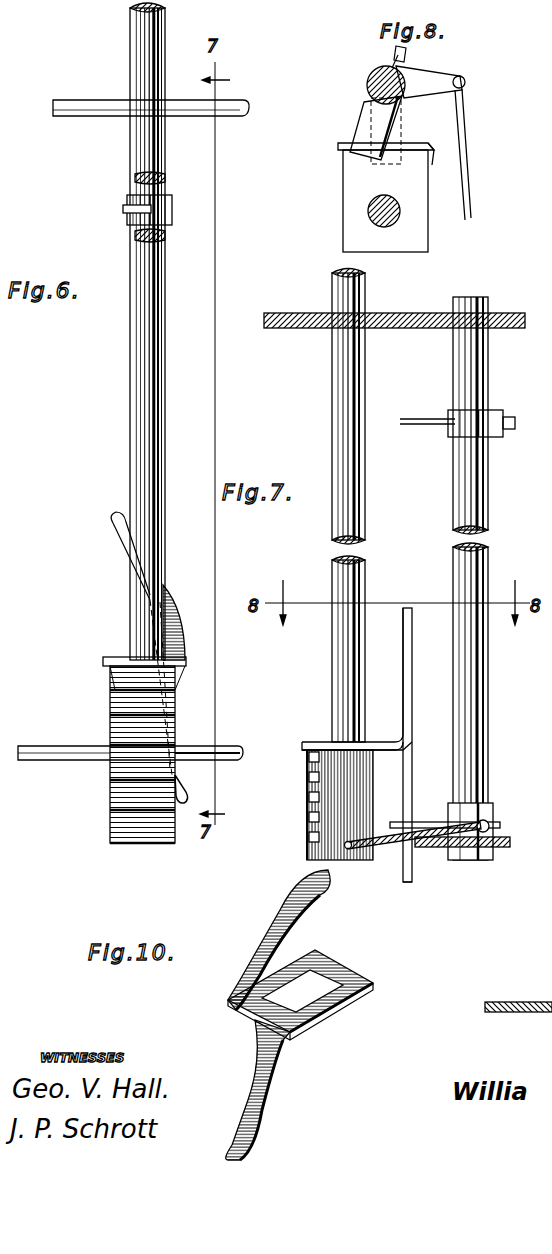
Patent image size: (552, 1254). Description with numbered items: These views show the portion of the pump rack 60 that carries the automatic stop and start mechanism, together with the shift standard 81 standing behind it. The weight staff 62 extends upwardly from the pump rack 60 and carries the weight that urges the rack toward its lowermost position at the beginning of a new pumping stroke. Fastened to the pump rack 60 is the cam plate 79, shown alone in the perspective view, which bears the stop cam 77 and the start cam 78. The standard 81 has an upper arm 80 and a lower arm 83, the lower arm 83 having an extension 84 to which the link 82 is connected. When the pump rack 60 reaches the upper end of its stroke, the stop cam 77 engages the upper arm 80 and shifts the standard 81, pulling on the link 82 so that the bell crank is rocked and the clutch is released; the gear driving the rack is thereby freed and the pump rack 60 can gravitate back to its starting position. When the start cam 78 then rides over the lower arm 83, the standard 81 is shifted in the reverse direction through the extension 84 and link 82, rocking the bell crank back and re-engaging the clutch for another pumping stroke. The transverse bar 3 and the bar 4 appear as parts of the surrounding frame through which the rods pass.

In FIG. 6, the transverse bar 3 is at (232, 107).
In FIG. 7, the transverse bar 3 is at (292, 312).
In FIG. 10, the bar 4 is at (512, 1012).
In FIG. 6, the pump rack 60 is at (128, 830).
In FIG. 7, the pump rack 60 is at (305, 796).
In FIG. 6, the weight staff 62 is at (163, 362).
In FIG. 8, the weight staff 62 is at (378, 199).
In FIG. 7, the weight staff 62 is at (340, 425).
In FIG. 6, the stop cam 77 is at (114, 533).
In FIG. 8, the stop cam 77 is at (338, 146).
In FIG. 7, the stop cam 77 is at (403, 625).
In FIG. 10, the stop cam 77 is at (290, 888).
In FIG. 6, the start cam 78 is at (190, 797).
In FIG. 8, the start cam 78 is at (431, 152).
In FIG. 7, the start cam 78 is at (407, 884).
In FIG. 10, the start cam 78 is at (268, 1120).
In FIG. 6, the cam plate 79 is at (103, 661).
In FIG. 8, the cam plate 79 is at (343, 214).
In FIG. 7, the cam plate 79 is at (305, 742).
In FIG. 10, the cam plate 79 is at (338, 968).
In FIG. 6, the upper arm 80 is at (123, 209).
In FIG. 8, the upper arm 80 is at (363, 122).
In FIG. 7, the upper arm 80 is at (418, 410).
In FIG. 6, the standard 81 is at (167, 186).
In FIG. 8, the standard 81 is at (368, 82).
In FIG. 7, the standard 81 is at (487, 708).
In FIG. 8, the link 82 is at (469, 135).
In FIG. 7, the link 82 is at (378, 852).
In FIG. 8, the lower arm 83 is at (397, 128).
In FIG. 7, the lower arm 83 is at (420, 822).
In FIG. 8, the extension 84 is at (440, 75).
In FIG. 7, the extension 84 is at (490, 826).